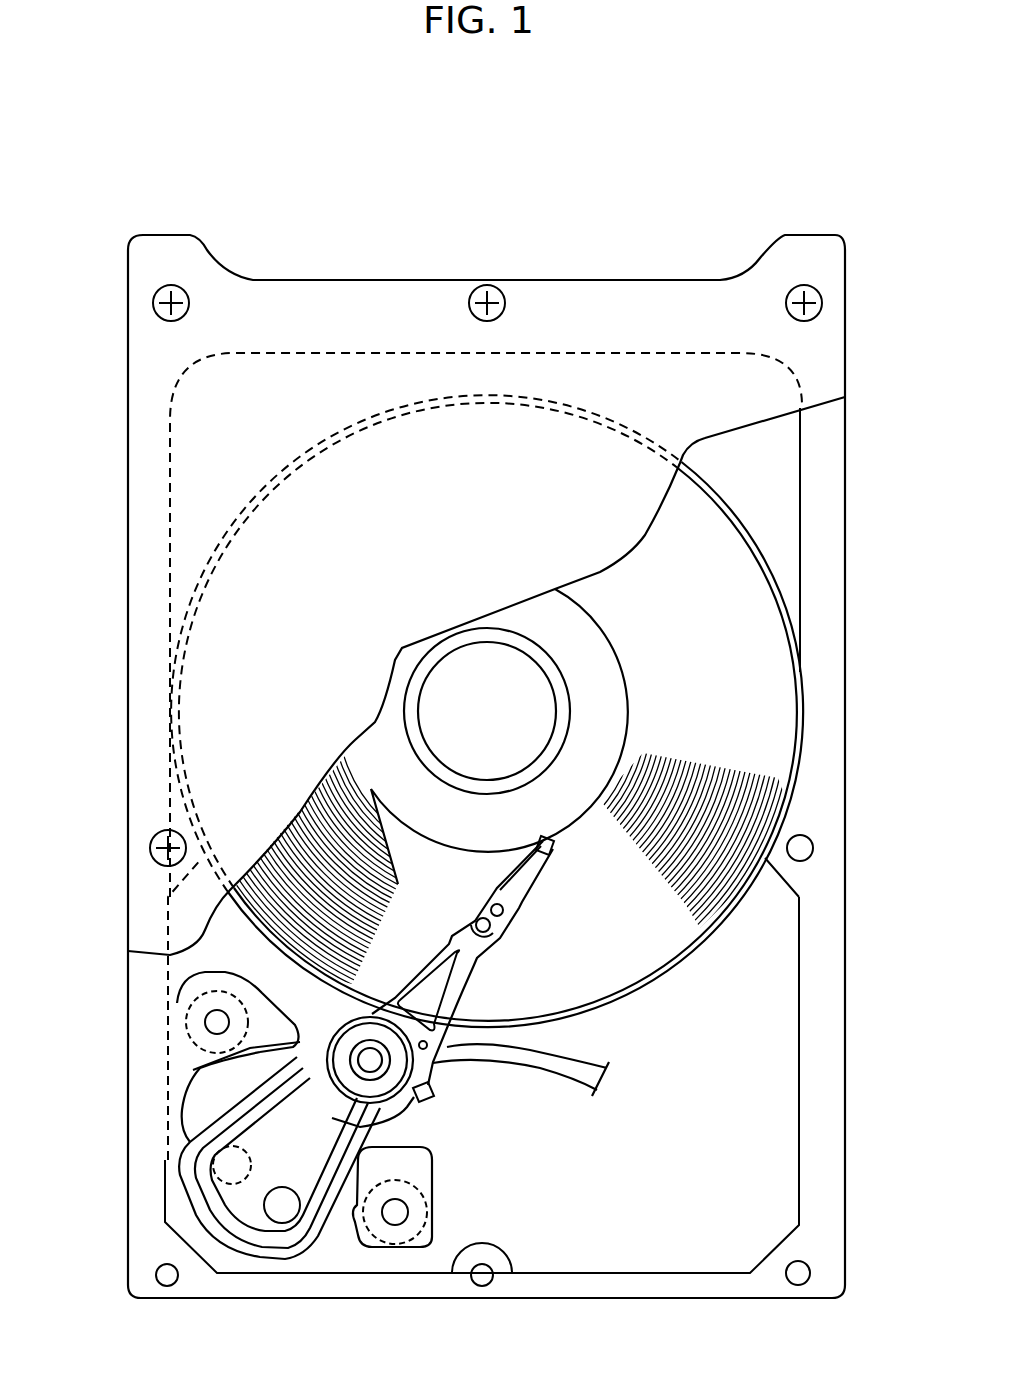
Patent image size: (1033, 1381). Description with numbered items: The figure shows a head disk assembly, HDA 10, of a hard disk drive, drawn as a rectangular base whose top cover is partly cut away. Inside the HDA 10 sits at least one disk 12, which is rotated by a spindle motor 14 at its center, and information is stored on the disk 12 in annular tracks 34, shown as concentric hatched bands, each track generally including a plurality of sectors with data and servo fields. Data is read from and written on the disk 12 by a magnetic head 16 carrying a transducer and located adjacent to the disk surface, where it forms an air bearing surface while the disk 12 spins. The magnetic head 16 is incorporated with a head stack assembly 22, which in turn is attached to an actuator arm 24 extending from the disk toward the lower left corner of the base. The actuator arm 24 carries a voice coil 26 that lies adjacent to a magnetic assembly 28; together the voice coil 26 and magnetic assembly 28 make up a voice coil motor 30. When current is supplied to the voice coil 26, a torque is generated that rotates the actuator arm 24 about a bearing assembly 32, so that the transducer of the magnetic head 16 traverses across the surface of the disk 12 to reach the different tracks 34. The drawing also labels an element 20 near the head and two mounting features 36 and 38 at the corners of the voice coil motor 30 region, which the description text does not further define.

The head disk assembly 10 is at (636, 187).
The disk 12 is at (758, 638).
The spindle motor 14 is at (460, 685).
The magnetic head 16 is at (552, 848).
The suspension 20 is at (542, 870).
The head stack assembly 22 is at (490, 966).
The actuator arm 24 is at (283, 1085).
The voice coil 26 is at (205, 1154).
The magnetic assembly 28 is at (213, 1096).
The voice coil motor 30 is at (337, 1230).
The bearing assembly 32 is at (378, 1073).
The annular tracks 34 is at (333, 842).
The boss / stopper 36 is at (433, 1210).
The boss / stopper 38 is at (177, 1001).